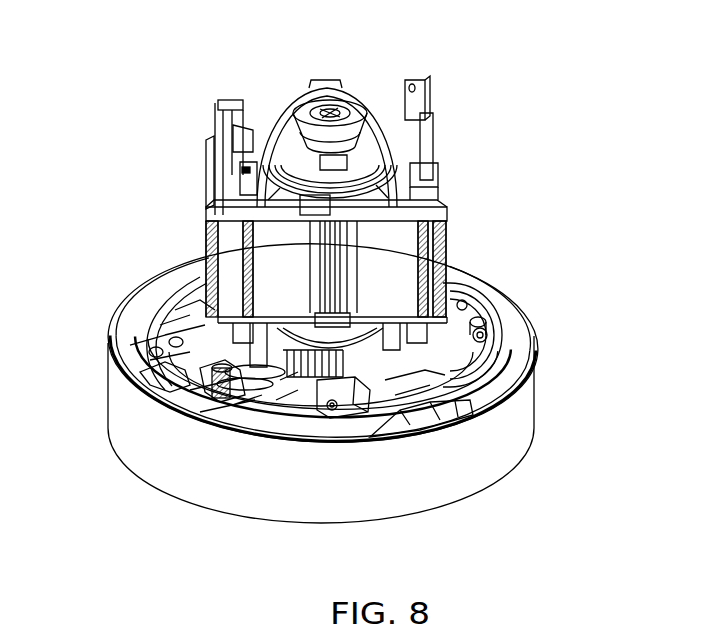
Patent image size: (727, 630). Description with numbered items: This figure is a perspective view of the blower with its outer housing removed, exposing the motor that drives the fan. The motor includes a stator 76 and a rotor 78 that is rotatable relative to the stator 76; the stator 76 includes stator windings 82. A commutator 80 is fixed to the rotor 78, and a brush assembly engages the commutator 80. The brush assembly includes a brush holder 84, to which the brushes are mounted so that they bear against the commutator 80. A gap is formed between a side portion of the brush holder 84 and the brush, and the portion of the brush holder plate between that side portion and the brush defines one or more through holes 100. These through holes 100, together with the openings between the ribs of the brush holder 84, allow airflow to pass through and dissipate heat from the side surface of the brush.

The stator 76 is at (404, 262).
The rotor 78 is at (355, 95).
The commutator 80 is at (265, 405).
The stator windings 82 is at (392, 175).
The brush holder 84 is at (435, 367).
The through holes 100 is at (482, 328).